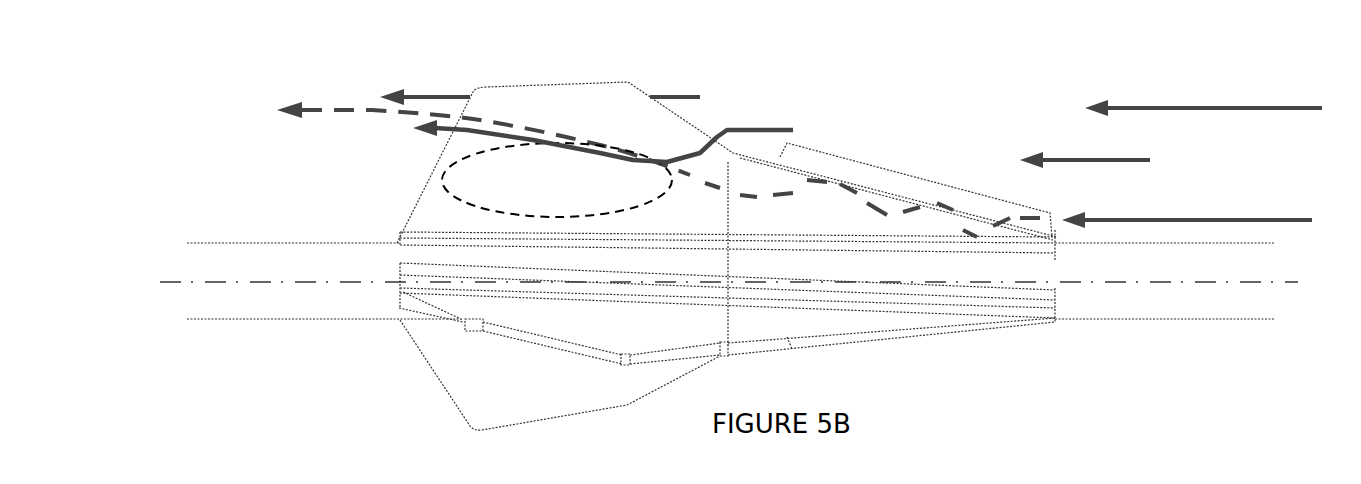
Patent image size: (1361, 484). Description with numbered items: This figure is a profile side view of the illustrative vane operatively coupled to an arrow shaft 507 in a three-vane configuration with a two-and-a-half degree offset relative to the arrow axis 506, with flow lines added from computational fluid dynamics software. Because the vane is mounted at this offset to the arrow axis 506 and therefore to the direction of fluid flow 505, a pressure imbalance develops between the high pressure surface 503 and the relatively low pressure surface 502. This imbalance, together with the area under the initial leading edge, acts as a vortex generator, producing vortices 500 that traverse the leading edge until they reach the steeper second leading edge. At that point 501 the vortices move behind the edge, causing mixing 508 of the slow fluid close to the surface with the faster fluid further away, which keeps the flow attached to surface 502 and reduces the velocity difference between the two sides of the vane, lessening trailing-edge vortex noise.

The vortices 500 is at (891, 168).
The point where vortices move behind the second leading edge 501 is at (730, 162).
The low pressure surface 502 is at (610, 120).
The high pressure surface 503 is at (653, 145).
The direction of fluid flow 505 is at (1171, 164).
The arrow axis 506 is at (188, 288).
The arrow shaft 507 is at (1127, 323).
The mixing of slow and high velocity fluids 508 is at (535, 122).